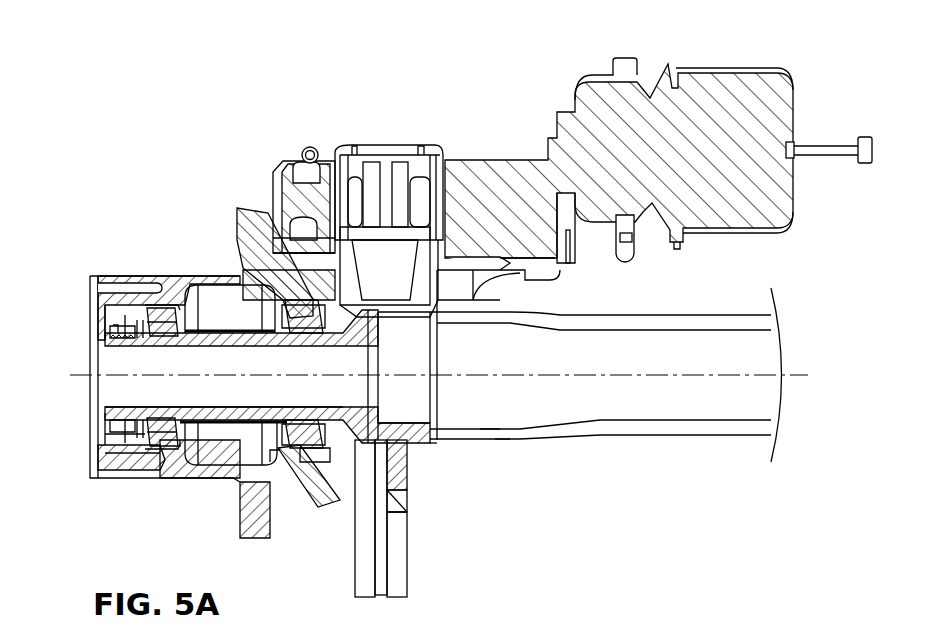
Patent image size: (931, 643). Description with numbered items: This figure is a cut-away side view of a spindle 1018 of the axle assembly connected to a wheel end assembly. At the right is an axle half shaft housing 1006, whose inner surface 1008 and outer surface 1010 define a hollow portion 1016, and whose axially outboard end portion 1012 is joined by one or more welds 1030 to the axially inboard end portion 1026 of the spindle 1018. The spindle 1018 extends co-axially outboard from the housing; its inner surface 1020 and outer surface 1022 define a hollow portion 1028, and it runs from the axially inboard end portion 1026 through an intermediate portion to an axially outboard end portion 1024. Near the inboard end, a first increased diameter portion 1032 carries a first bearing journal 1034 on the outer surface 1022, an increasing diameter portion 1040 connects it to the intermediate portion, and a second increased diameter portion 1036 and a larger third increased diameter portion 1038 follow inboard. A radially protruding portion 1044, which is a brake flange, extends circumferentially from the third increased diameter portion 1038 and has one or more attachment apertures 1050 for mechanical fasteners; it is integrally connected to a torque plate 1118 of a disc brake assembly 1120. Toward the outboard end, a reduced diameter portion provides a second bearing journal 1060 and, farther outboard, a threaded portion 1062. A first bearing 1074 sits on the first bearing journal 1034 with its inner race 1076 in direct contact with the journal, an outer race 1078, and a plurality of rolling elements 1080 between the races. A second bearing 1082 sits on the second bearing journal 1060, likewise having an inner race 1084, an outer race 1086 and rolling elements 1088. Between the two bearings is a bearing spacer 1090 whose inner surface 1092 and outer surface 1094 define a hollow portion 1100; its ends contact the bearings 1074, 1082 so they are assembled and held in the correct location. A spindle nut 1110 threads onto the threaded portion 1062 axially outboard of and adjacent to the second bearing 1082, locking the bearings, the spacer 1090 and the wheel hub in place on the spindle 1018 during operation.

The axle half shaft housing 1006 is at (647, 315).
The inner surface 1008 is at (503, 420).
The outer surface 1010 is at (540, 440).
The axially outboard end portion 1012 is at (483, 428).
The hollow portion 1016 is at (508, 340).
The spindle 1018 is at (213, 347).
The inner surface 1020 is at (195, 409).
The outer surface 1022 is at (225, 421).
The axially outboard end portion 1024 is at (147, 398).
The axially inboard end portion 1026 is at (408, 423).
The hollow portion 1028 is at (132, 372).
The weld 1030 is at (420, 443).
The first increased diameter portion 1032 is at (306, 335).
The first bearing journal 1034 is at (268, 421).
The second increased diameter portion 1036 is at (325, 430).
The third increased diameter portion 1038 is at (422, 445).
The increasing diameter portion 1040 is at (262, 335).
The radially protruding portion 1044 is at (400, 510).
The attachment aperture 1050 is at (405, 498).
The second bearing journal 1060 is at (143, 342).
The threaded portion 1062 is at (110, 413).
The first bearing 1074 is at (242, 216).
The inner race 1076 is at (315, 462).
The outer race 1078 is at (292, 447).
The rolling elements 1080 is at (305, 447).
The second bearing 1082 is at (152, 300).
The inner race 1084 is at (125, 435).
The outer race 1086 is at (160, 455).
The rolling elements 1088 is at (145, 437).
The bearing spacer 1090 is at (180, 443).
The inner surface 1092 is at (187, 300).
The outer surface 1094 is at (230, 330).
The hollow portion 1100 is at (253, 467).
The spindle nut 1110 is at (113, 332).
The torque plate 1118 is at (400, 578).
The disc brake assembly 1120 is at (485, 100).